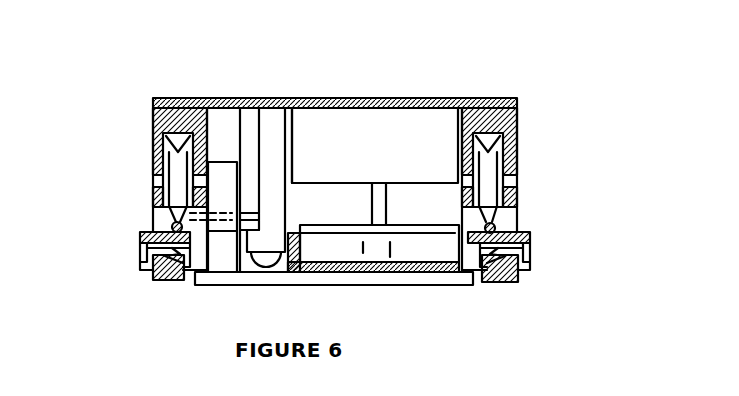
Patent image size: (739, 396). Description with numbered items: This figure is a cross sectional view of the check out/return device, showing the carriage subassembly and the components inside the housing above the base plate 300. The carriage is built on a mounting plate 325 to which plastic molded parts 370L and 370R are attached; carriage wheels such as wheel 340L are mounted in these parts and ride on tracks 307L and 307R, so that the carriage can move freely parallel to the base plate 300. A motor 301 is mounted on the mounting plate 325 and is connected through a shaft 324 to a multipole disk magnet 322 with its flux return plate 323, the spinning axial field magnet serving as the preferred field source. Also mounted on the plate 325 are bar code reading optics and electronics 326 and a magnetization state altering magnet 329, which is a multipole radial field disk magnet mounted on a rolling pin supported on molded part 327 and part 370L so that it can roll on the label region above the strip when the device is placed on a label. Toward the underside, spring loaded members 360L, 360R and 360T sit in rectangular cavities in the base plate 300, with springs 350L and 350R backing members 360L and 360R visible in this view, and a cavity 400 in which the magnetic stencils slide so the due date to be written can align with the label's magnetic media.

The base plate 300 is at (531, 242).
The motor 301 is at (344, 135).
The left track 307L is at (173, 226).
The right track 307R is at (495, 229).
The multipole disk magnet 322 is at (495, 222).
The flux return plate 323 is at (413, 245).
The shaft 324 is at (380, 190).
The mounting plate 325 is at (463, 100).
The bar code reading optics and electronics 326 is at (293, 133).
The molded part 327 is at (253, 122).
The magnetization state altering magnet 329 is at (224, 178).
The left carriage wheel 340L is at (153, 145).
The left spring 350L is at (140, 241).
The right spring 350R is at (532, 258).
The left spring loaded member 360L is at (153, 278).
The right spring loaded member 360R is at (520, 280).
The top spring loaded member 360T is at (388, 284).
The left plastic molded part 370L is at (155, 110).
The right plastic molded part 370R is at (516, 162).
The cavity 400 is at (422, 272).